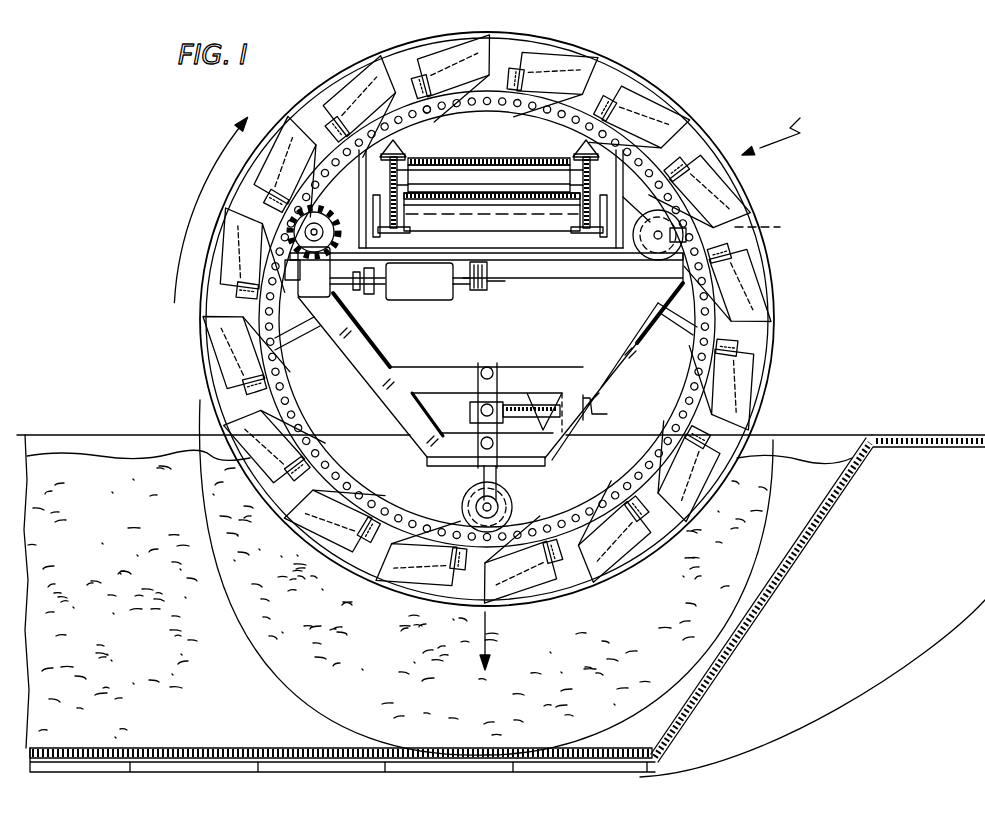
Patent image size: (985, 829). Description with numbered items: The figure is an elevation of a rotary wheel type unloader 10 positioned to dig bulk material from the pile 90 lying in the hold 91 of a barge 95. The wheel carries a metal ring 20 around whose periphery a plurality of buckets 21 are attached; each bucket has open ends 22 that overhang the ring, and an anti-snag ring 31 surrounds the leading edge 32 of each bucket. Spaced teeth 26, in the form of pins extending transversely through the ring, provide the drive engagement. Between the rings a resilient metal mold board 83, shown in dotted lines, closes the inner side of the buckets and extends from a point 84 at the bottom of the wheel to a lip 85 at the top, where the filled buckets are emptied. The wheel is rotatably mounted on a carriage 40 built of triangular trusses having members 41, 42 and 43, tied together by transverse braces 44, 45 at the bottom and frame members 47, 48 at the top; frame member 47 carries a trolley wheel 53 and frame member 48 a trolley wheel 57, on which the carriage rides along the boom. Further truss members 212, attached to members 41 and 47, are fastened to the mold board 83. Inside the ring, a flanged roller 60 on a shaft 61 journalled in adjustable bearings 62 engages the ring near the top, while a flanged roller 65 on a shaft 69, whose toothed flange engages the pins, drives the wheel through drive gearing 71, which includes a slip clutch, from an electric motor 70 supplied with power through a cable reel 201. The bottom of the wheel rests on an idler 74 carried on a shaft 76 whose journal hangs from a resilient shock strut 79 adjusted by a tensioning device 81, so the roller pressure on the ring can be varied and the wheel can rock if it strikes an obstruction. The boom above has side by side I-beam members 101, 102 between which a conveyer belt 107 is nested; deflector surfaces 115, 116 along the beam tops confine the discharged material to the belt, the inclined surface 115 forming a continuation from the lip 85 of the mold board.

The rotary wheel type unloader 10 is at (776, 131).
The metal ring 20 is at (476, 93).
The bucket 21 is at (213, 335).
The open end of bucket 22 is at (240, 418).
The teeth 26 is at (428, 112).
The anti-snag ring 31 is at (525, 33).
The leading edge of bucket 32 is at (400, 135).
The carriage 40 is at (372, 389).
The truss member 41 is at (350, 347).
The truss member 42 is at (630, 362).
The transverse frame member 43 is at (566, 271).
The transverse brace 44 is at (523, 368).
The transverse brace 45 is at (443, 455).
The frame member 47 is at (297, 248).
The frame member 48 is at (640, 215).
The trolley wheel 53 is at (364, 235).
The trolley wheel 57 is at (600, 192).
The flanged roller 60 is at (665, 238).
The shaft 61 is at (680, 232).
The adjustable bearing 62 is at (770, 225).
The flanged roller 65 is at (214, 196).
The shaft 69 is at (296, 236).
The electric motor 70 is at (424, 295).
The drive gearing 71 is at (365, 295).
The idler 74 is at (470, 502).
The shaft 76 is at (500, 508).
The resilient shock strut 79 is at (493, 470).
The tensioning device 81 is at (473, 403).
The mold board 83 is at (410, 88).
The point at bottom of wheel 84 is at (457, 565).
The lip 85 is at (403, 158).
The pile 90 is at (88, 462).
The hold 91 is at (673, 735).
The barge 95 is at (928, 658).
The I-beam member 101 is at (378, 200).
The I-beam member 102 is at (588, 205).
The conveyer belt 107 is at (468, 158).
The deflector surface 115 is at (412, 160).
The deflector surface 116 is at (582, 145).
The cable reel 201 is at (480, 288).
The truss member 212 is at (287, 347).